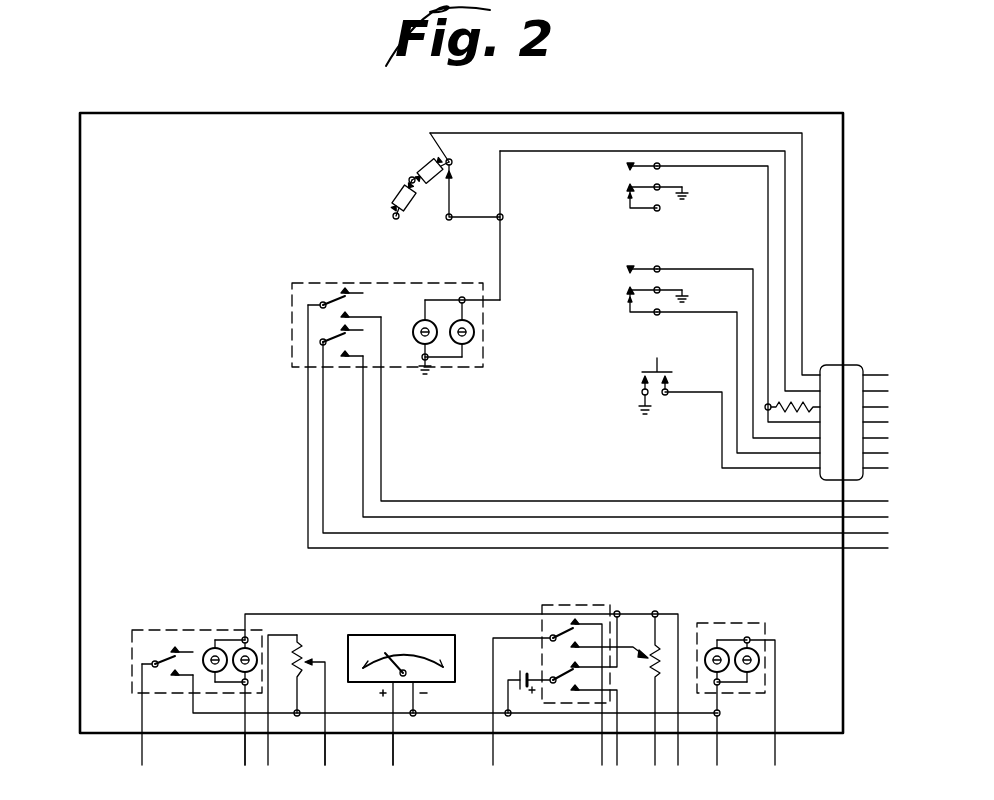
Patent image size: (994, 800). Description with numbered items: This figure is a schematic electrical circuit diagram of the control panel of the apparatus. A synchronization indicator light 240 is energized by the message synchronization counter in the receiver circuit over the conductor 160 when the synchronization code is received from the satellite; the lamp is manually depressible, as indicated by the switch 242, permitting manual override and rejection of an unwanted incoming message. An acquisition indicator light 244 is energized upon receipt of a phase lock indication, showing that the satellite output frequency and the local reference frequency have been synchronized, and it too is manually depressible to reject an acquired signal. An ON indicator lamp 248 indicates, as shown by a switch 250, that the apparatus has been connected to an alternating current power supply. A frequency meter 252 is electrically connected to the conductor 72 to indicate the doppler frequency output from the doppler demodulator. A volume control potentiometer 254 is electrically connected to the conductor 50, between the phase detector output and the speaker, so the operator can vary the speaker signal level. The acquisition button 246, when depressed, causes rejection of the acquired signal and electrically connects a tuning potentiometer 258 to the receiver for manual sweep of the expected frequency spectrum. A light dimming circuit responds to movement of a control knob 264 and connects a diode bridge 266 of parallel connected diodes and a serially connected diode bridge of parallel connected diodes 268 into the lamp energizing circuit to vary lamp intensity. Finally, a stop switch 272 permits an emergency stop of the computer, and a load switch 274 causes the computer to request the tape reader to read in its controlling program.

The serially connected diode bridge of parallel connected diodes 268 is at (421, 160).
The diode bridge of parallel connected diodes 266 is at (391, 196).
The control knob 264 is at (447, 203).
The switch 250 is at (330, 296).
The ON indicator lamp 248 is at (478, 332).
The stop switch 272 is at (611, 205).
The load switch 274 is at (608, 271).
The switch 242 is at (158, 652).
The synchronization indicator light 240 is at (208, 648).
The volume control potentiometer 254 is at (307, 660).
The frequency meter 252 is at (403, 635).
The acquisition button 246 is at (542, 638).
The tuning potentiometer 258 is at (668, 655).
The acquisition indicator light 244 is at (729, 690).
The conductor 160 is at (245, 750).
The conductor 50 is at (323, 750).
The conductor 72 is at (393, 750).